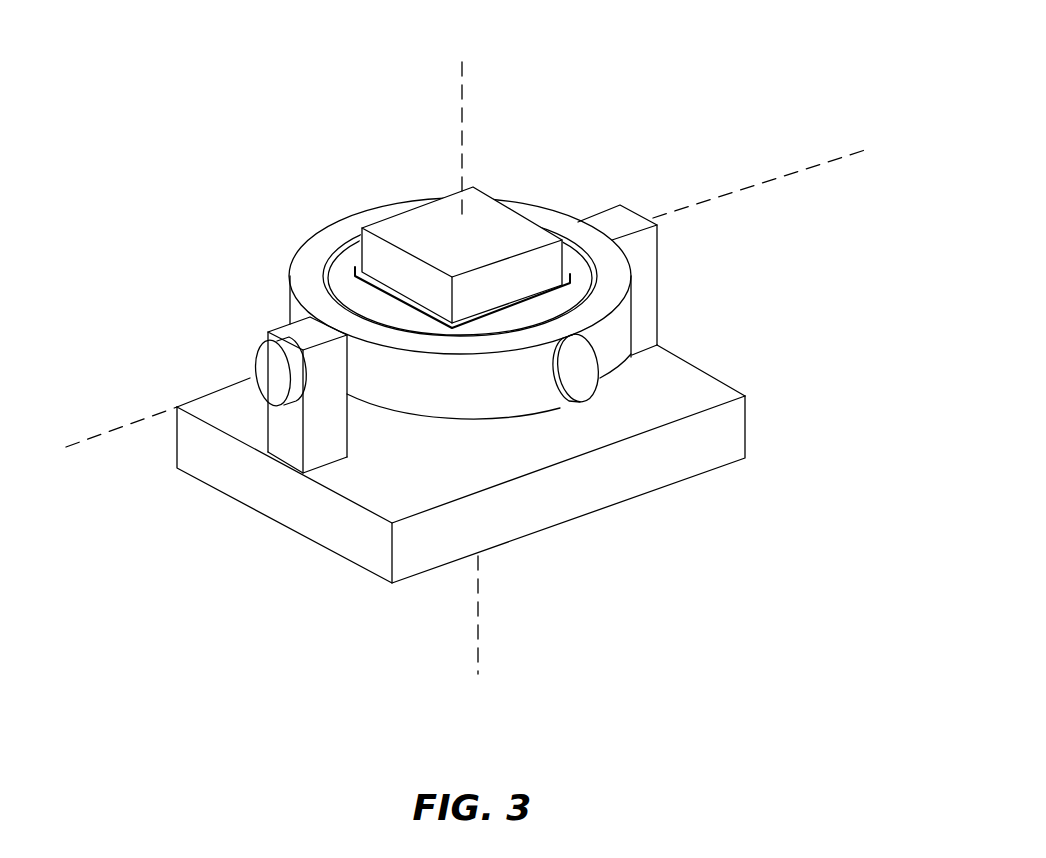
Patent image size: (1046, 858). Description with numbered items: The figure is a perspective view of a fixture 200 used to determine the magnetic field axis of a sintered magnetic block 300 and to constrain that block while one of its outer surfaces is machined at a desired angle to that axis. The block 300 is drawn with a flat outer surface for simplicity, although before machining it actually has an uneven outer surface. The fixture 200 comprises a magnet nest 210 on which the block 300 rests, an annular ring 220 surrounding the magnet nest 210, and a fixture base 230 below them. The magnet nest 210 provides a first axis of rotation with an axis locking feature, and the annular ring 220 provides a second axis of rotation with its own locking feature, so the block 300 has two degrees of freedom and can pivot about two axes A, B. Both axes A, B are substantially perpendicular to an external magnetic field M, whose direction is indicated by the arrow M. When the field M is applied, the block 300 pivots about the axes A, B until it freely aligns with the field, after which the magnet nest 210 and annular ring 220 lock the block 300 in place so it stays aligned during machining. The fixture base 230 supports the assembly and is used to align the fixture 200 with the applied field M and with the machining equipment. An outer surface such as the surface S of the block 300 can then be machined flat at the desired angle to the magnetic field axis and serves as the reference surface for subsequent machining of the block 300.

The fixture 200 is at (515, 292).
The magnet nest 210 is at (560, 303).
The annular ring 220 is at (307, 292).
The fixture base 230 is at (660, 388).
The sintered block 300 is at (505, 205).
The surface S is at (525, 262).
The magnetic field M is at (429, 335).
The axis A is at (449, 306).
The axis B is at (464, 355).